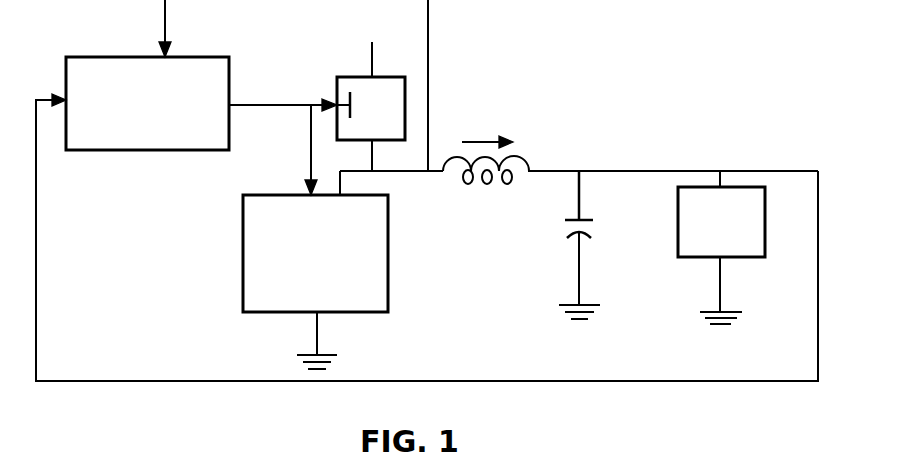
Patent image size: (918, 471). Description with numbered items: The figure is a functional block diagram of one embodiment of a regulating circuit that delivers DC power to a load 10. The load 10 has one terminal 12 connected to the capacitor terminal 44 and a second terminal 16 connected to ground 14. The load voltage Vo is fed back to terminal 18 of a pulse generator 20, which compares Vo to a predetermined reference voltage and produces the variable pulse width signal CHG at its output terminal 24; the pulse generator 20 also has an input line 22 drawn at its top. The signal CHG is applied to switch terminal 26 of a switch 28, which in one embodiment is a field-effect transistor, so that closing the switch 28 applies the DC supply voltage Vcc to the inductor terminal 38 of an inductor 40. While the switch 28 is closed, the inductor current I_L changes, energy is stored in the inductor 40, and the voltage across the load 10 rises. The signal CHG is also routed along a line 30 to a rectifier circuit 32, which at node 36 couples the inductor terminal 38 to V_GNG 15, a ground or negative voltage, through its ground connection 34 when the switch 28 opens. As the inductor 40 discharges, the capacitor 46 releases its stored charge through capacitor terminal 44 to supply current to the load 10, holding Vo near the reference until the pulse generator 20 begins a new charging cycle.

The load 10 is at (721, 222).
The load terminal 12 is at (731, 170).
The ground 14 is at (565, 313).
The V_GNG 15 is at (338, 356).
The second terminal 16 is at (724, 260).
The terminal 18 is at (38, 96).
The pulse generator 20 is at (147, 103).
The input line 22 is at (170, 55).
The pulse generator output terminal 24 is at (231, 100).
The switch terminal 26 is at (326, 104).
The switch 28 is at (371, 72).
The rectifier control input 30 is at (303, 194).
The rectifier circuit 32 is at (315, 253).
The rectifier ground connection 34 is at (310, 317).
The node 36 is at (348, 194).
The inductor terminal 38 is at (443, 168).
The inductor 40 is at (486, 182).
The capacitor terminal 44 is at (585, 221).
The capacitor 46 is at (577, 235).